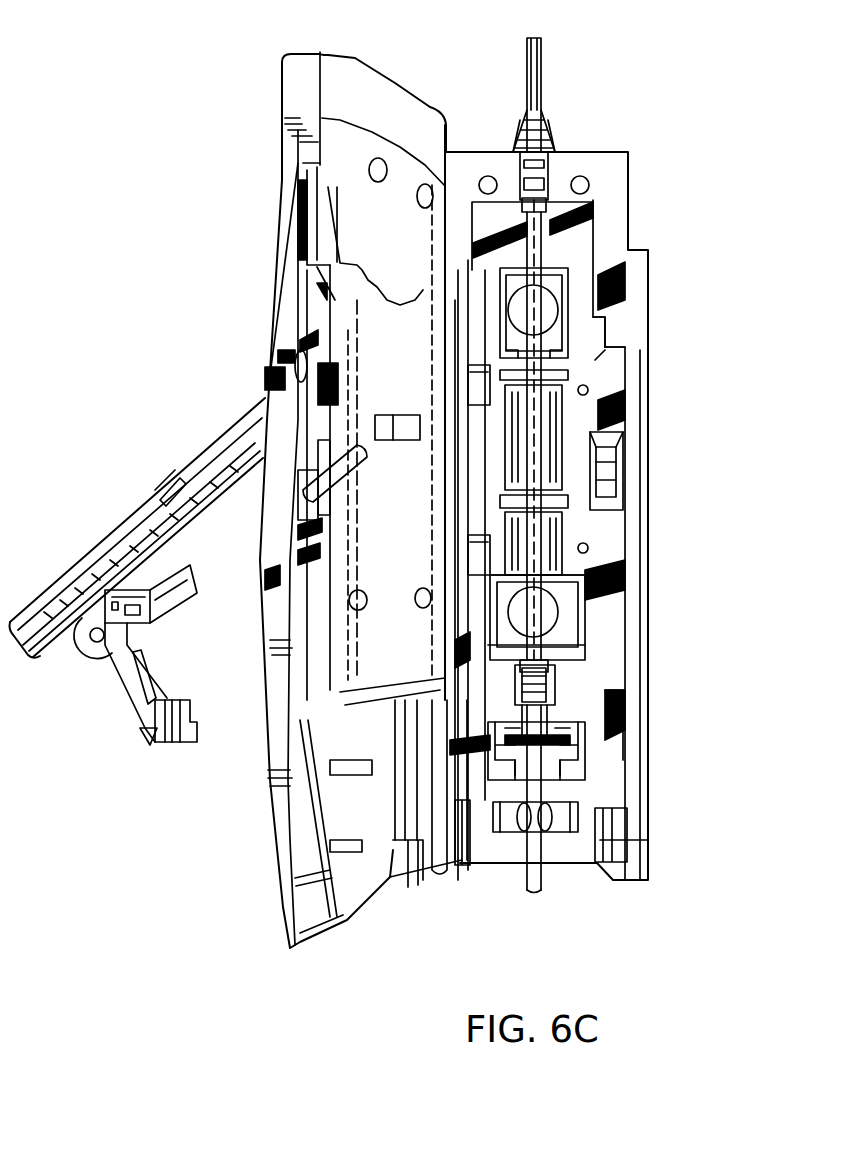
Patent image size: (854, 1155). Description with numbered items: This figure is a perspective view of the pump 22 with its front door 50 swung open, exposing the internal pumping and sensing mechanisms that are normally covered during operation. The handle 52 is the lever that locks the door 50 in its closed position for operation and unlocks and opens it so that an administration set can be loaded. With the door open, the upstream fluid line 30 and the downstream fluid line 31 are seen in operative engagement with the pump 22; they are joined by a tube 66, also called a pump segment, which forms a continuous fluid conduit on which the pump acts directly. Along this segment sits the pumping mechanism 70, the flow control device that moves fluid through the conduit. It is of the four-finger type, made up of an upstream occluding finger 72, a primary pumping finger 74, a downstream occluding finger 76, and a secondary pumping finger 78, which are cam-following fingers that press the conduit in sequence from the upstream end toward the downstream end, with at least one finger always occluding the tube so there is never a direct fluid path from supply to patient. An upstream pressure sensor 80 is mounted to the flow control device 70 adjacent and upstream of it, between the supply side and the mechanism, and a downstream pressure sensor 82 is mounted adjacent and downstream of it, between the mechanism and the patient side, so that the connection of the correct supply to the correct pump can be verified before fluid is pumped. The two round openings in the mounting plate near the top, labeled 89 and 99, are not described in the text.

The pump 22 is at (595, 152).
The upstream fluid line 30 is at (543, 46).
The downstream fluid line 31 is at (546, 875).
The front door 50 is at (305, 85).
The handle 52 is at (135, 500).
The tube 66 is at (540, 250).
The pumping mechanism 70 is at (598, 333).
The upstream occluding finger 72 is at (607, 357).
The primary pumping finger 74 is at (553, 438).
The downstream occluding finger 76 is at (612, 466).
The secondary pumping finger 78 is at (553, 541).
The upstream pressure sensor 80 is at (575, 298).
The downstream pressure sensor 82 is at (563, 621).
The mounting hole 89 is at (590, 183).
The mounting hole 99 is at (487, 177).